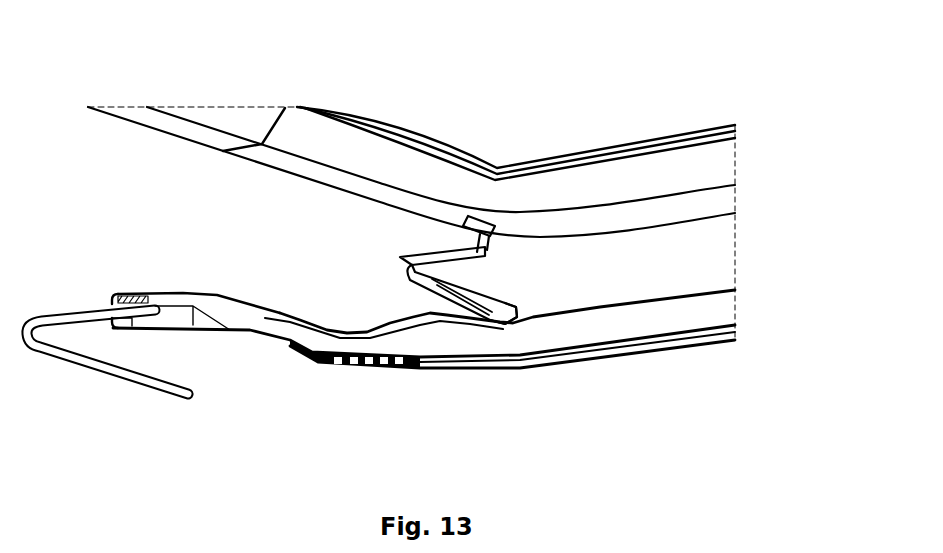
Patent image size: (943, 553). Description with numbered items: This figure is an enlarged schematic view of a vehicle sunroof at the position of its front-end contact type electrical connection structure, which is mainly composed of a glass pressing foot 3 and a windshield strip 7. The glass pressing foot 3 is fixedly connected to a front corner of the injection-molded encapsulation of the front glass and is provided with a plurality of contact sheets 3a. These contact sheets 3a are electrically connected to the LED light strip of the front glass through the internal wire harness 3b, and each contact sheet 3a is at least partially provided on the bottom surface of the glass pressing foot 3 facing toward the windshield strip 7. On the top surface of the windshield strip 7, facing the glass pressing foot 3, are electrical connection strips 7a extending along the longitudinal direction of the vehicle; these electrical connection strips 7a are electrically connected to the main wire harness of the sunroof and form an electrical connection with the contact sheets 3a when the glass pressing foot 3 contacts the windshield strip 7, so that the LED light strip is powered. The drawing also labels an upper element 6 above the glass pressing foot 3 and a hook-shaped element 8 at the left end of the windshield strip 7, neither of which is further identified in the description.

The panel 6 is at (710, 162).
The clip 3 is at (507, 297).
The clip end portion 3a is at (493, 333).
The clip tab 3b is at (493, 247).
The retaining strip 7 is at (258, 323).
The strip portion 7a is at (303, 312).
The wire hook 8 is at (120, 370).